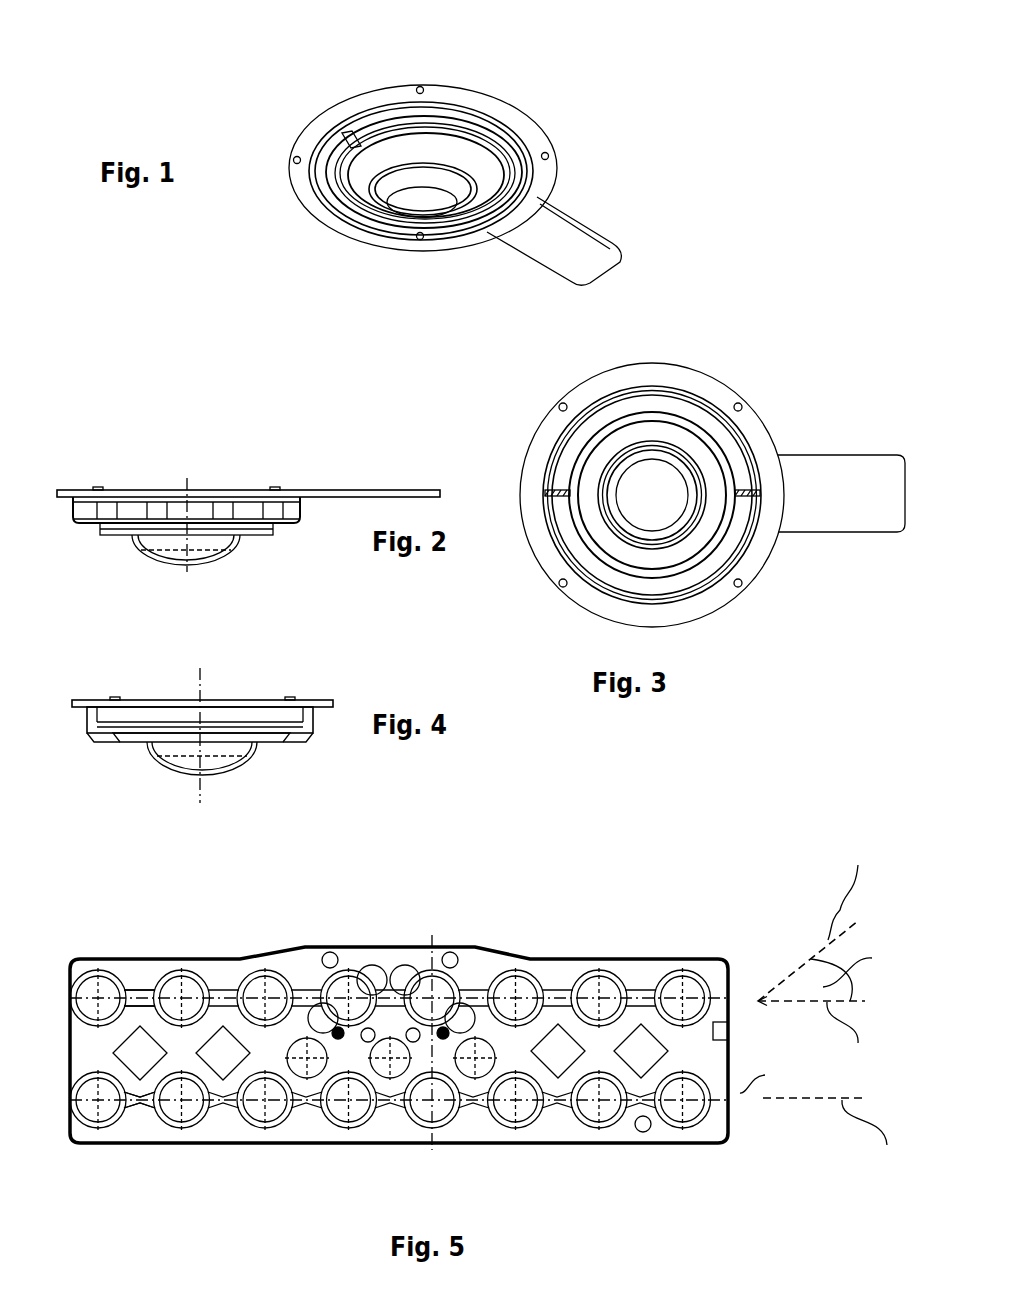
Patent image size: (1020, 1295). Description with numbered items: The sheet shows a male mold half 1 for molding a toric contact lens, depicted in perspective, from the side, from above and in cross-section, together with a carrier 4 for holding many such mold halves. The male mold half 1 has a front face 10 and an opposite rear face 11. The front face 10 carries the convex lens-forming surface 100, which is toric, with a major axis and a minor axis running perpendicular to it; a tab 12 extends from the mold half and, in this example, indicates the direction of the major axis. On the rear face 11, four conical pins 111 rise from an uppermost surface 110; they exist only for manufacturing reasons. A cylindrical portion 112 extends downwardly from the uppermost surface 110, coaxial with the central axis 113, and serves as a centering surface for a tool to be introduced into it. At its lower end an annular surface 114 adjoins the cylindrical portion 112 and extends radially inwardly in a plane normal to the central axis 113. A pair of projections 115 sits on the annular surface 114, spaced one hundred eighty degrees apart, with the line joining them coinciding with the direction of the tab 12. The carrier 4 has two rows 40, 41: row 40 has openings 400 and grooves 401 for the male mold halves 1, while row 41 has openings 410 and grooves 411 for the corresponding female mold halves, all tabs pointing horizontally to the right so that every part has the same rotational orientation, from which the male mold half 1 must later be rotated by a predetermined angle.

In FIG. 1, the male mold half 1 is at (652, 128).
In FIG. 2, the male mold half 1 is at (325, 473).
In FIG. 1, the front face 10 is at (375, 253).
In FIG. 2, the front face 10 is at (167, 568).
In FIG. 4, the front face 10 is at (260, 767).
In FIG. 4, the convex lens-forming surface 100 is at (177, 768).
In FIG. 1, the rear face 11 is at (352, 88).
In FIG. 2, the rear face 11 is at (163, 465).
In FIG. 1, the uppermost surface 110 is at (500, 110).
In FIG. 3, the uppermost surface 110 is at (703, 605).
In FIG. 1, the conical pins 111 is at (543, 167).
In FIG. 3, the conical pins 111 is at (738, 403).
In FIG. 4, the cylindrical portion 112 is at (93, 716).
In FIG. 2, the central axis 113 is at (197, 542).
In FIG. 4, the central axis 113 is at (203, 673).
In FIG. 1, the annular surface 114 is at (328, 170).
In FIG. 3, the annular surface 114 is at (587, 427).
In FIG. 3, the projections 115 is at (548, 530).
In FIG. 1, the tab 12 is at (577, 258).
In FIG. 3, the tab 12 is at (847, 487).
In FIG. 5, the carrier 4 is at (593, 928).
In FIG. 5, the row 40 is at (70, 1000).
In FIG. 5, the openings 400 is at (93, 990).
In FIG. 5, the grooves 401 is at (138, 995).
In FIG. 5, the row 41 is at (70, 1100).
In FIG. 5, the openings 410 is at (90, 1113).
In FIG. 5, the grooves 411 is at (135, 1102).